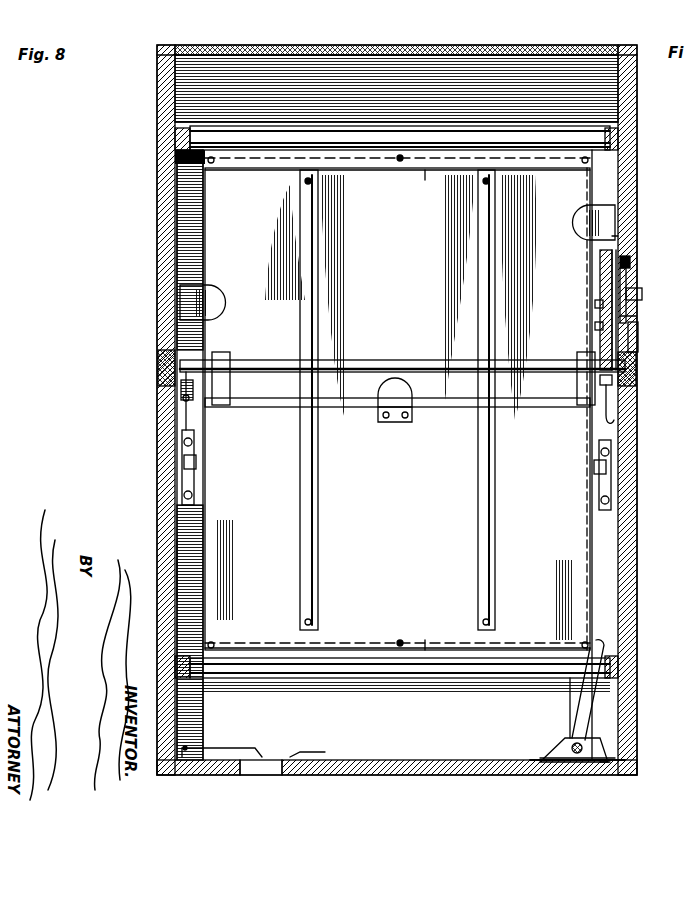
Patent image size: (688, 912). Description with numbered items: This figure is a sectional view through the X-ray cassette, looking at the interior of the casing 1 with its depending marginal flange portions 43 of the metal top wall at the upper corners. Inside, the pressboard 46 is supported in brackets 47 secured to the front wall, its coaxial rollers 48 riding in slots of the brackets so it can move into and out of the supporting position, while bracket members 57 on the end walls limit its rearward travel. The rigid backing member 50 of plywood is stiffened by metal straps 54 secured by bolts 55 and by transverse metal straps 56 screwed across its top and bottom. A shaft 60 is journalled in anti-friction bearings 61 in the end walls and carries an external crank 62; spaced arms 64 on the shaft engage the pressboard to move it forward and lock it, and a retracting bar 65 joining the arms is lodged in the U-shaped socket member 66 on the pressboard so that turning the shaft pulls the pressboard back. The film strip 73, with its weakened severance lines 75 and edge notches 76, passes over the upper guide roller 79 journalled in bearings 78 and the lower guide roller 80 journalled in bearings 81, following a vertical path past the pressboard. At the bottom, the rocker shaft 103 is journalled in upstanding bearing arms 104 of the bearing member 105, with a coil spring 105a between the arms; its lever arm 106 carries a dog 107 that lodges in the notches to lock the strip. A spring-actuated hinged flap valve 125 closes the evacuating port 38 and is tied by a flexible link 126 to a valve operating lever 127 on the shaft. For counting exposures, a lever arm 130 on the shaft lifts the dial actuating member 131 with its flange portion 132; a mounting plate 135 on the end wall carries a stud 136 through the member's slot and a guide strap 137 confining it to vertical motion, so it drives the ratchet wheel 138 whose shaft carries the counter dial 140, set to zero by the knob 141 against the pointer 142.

The casing 1 is at (622, 185).
The depending marginal flange portions 43 is at (160, 55).
The pressboard 46 is at (595, 585).
The rigid backing member 50 is at (570, 572).
The film strip 73 is at (512, 108).
The bearings 78 is at (175, 140).
The upper guide roller 79 is at (175, 160).
The weakened severance line 75 is at (250, 183).
The notches 76 is at (208, 165).
The metal straps 54 is at (480, 220).
The bolts 55 is at (312, 181).
The transverse metal straps 56 is at (425, 175).
The bracket members 57 is at (220, 303).
The shaft 60 is at (395, 352).
The anti-friction bearings 61 is at (160, 372).
The retracting bar 65 is at (445, 410).
The arms 64 is at (222, 406).
The socket member 66 is at (393, 424).
The valve operating lever 127 is at (185, 392).
The brackets 47 is at (182, 468).
The coaxial rollers 48 is at (185, 462).
The dial actuating member 131 is at (600, 343).
The guide strap 137 is at (598, 305).
The stud 136 is at (598, 328).
The ratchet wheel 138 is at (620, 240).
The pointer 142 is at (630, 257).
The counter dial 140 is at (625, 275).
The knob 141 is at (645, 294).
The mounting plate 135 is at (630, 318).
The crank 62 is at (634, 340).
The lever arm 130 is at (610, 390).
The flange portion 132 is at (615, 420).
The lower guide roller 80 is at (356, 678).
The bearings 81 is at (180, 658).
The bearing arms 104 is at (560, 750).
The dog 107 is at (602, 648).
The lever arm 106 is at (568, 705).
The bearing member 105 is at (550, 770).
The rocker shaft 103 is at (565, 775).
The coil spring 105a is at (606, 770).
The hinged flap valve 125 is at (270, 740).
The evacuating port 38 is at (250, 775).
The flexible link 126 is at (180, 570).